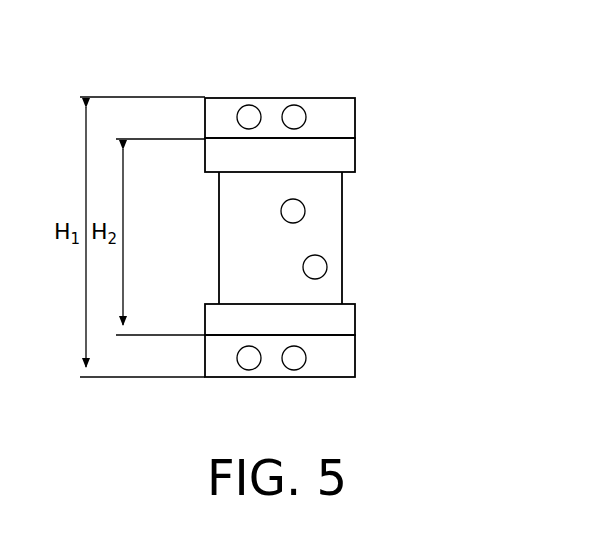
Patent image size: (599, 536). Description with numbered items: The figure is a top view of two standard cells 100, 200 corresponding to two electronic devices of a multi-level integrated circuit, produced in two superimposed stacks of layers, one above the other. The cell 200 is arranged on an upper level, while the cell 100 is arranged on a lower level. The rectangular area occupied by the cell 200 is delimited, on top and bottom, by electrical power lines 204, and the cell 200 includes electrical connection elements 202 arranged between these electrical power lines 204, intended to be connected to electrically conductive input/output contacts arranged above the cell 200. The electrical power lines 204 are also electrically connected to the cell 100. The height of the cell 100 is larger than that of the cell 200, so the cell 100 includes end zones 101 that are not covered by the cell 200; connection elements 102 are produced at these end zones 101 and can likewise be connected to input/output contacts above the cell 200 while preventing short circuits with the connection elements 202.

The standard cell 100 is at (343, 98).
The end zones 101 is at (345, 125).
The connection elements 102 is at (292, 115).
The standard cell 200 is at (204, 229).
The electrical connection elements 202 is at (295, 212).
The electrical power lines 204 is at (347, 156).